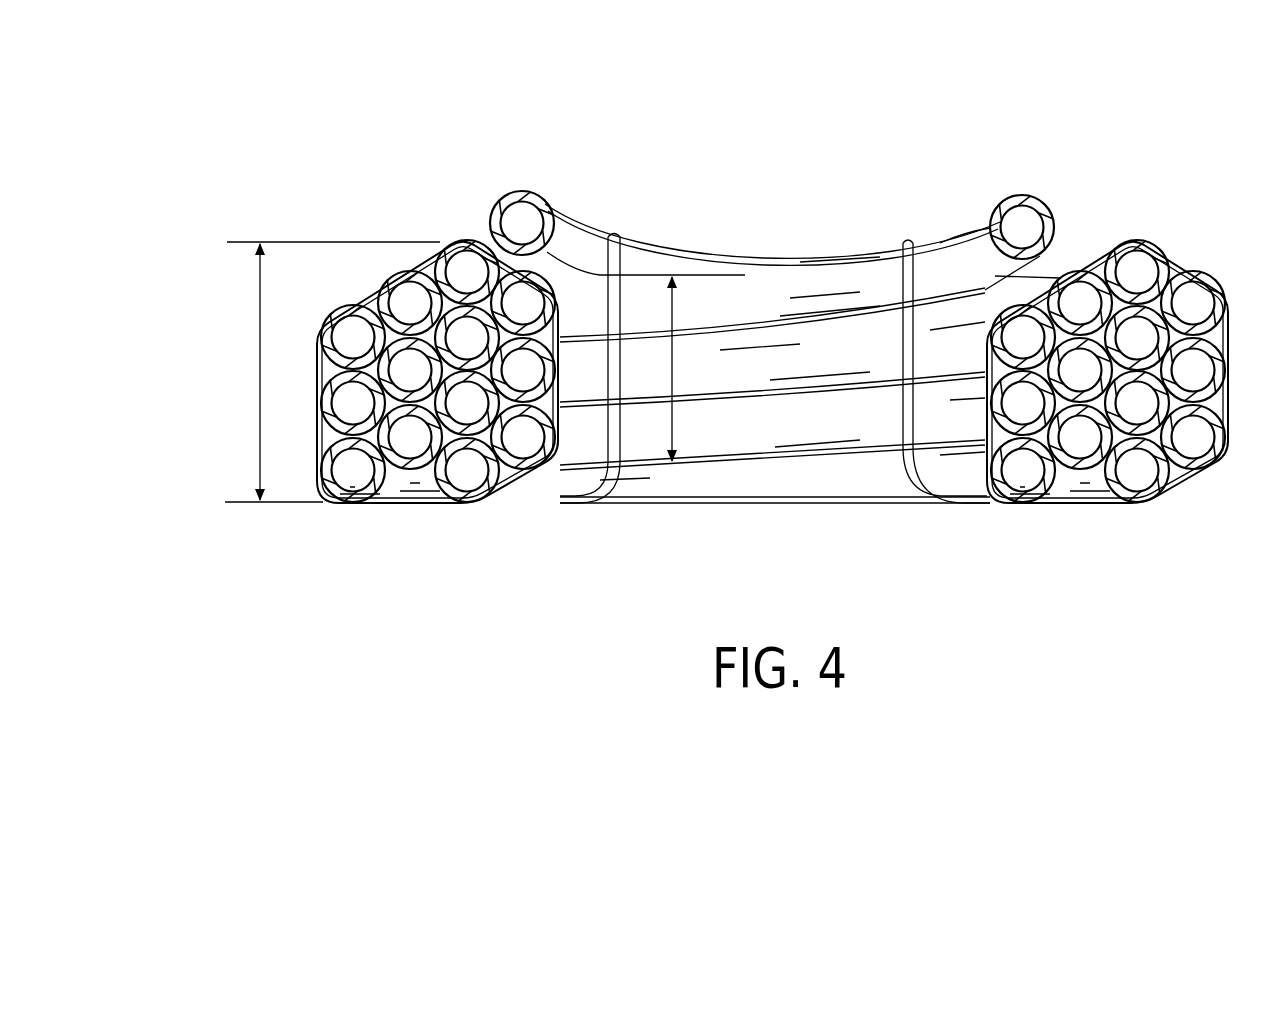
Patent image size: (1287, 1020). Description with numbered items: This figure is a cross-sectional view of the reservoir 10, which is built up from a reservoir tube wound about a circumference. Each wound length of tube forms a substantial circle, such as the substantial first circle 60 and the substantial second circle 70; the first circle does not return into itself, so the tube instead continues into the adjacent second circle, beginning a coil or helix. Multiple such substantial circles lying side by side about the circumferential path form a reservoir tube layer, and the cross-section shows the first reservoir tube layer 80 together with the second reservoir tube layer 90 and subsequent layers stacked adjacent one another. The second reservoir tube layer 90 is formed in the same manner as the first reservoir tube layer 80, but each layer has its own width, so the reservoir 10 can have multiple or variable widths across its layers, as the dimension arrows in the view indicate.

The reservoir 10 is at (277, 166).
The substantial first circle 60 is at (961, 486).
The substantial second circle 70 is at (961, 405).
The first reservoir tube layer 80 is at (541, 263).
The second reservoir tube layer 90 is at (461, 226).